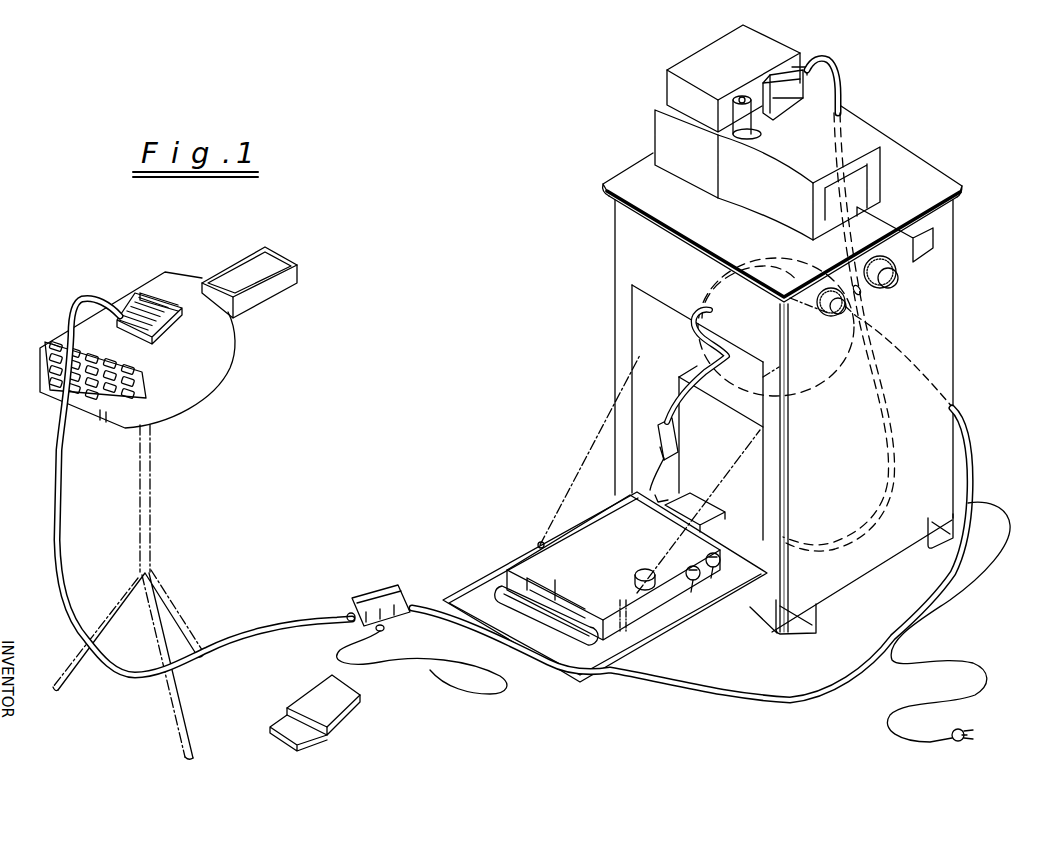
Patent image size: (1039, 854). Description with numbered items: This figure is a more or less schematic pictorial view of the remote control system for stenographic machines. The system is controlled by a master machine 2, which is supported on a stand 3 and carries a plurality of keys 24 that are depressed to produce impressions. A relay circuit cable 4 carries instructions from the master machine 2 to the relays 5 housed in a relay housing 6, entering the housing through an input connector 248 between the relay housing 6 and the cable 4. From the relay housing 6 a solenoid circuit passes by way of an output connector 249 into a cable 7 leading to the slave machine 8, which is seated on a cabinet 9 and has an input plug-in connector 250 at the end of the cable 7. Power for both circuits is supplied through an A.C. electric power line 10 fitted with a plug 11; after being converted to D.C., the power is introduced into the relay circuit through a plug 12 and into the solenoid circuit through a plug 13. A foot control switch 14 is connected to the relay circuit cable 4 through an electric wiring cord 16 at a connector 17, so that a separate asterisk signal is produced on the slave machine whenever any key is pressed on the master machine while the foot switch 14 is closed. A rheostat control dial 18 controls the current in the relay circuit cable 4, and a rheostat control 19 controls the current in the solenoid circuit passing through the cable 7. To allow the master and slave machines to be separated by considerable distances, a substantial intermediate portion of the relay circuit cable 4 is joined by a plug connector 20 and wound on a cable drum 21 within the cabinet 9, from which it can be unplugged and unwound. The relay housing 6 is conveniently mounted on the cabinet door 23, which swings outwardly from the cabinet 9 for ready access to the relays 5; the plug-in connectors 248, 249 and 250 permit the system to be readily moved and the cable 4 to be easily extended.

The master machine 2 is at (134, 290).
The keys 24 is at (50, 342).
The stand 3 is at (151, 470).
The relay circuit cable 4 is at (288, 617).
The connector 17 is at (391, 596).
The foot control switch 14 is at (338, 710).
The electric wiring cord 16 is at (479, 690).
The cabinet door 23 is at (547, 660).
The relay housing 6 is at (624, 558).
The input connector 248 is at (552, 621).
The relays 5 is at (652, 589).
The plug 12 is at (699, 584).
The plug 13 is at (716, 570).
The output connector 249 is at (683, 518).
The cable 7 is at (843, 92).
The plug connector 20 is at (662, 432).
The cabinet 9 is at (612, 270).
The slave machine 8 is at (650, 135).
The input plug-in connector 250 is at (782, 75).
The rheostat control dial 18 is at (842, 316).
The rheostat control 19 is at (895, 284).
The cable drum 21 is at (841, 396).
The A.C. electric power line 10 is at (950, 658).
The plug 11 is at (962, 747).